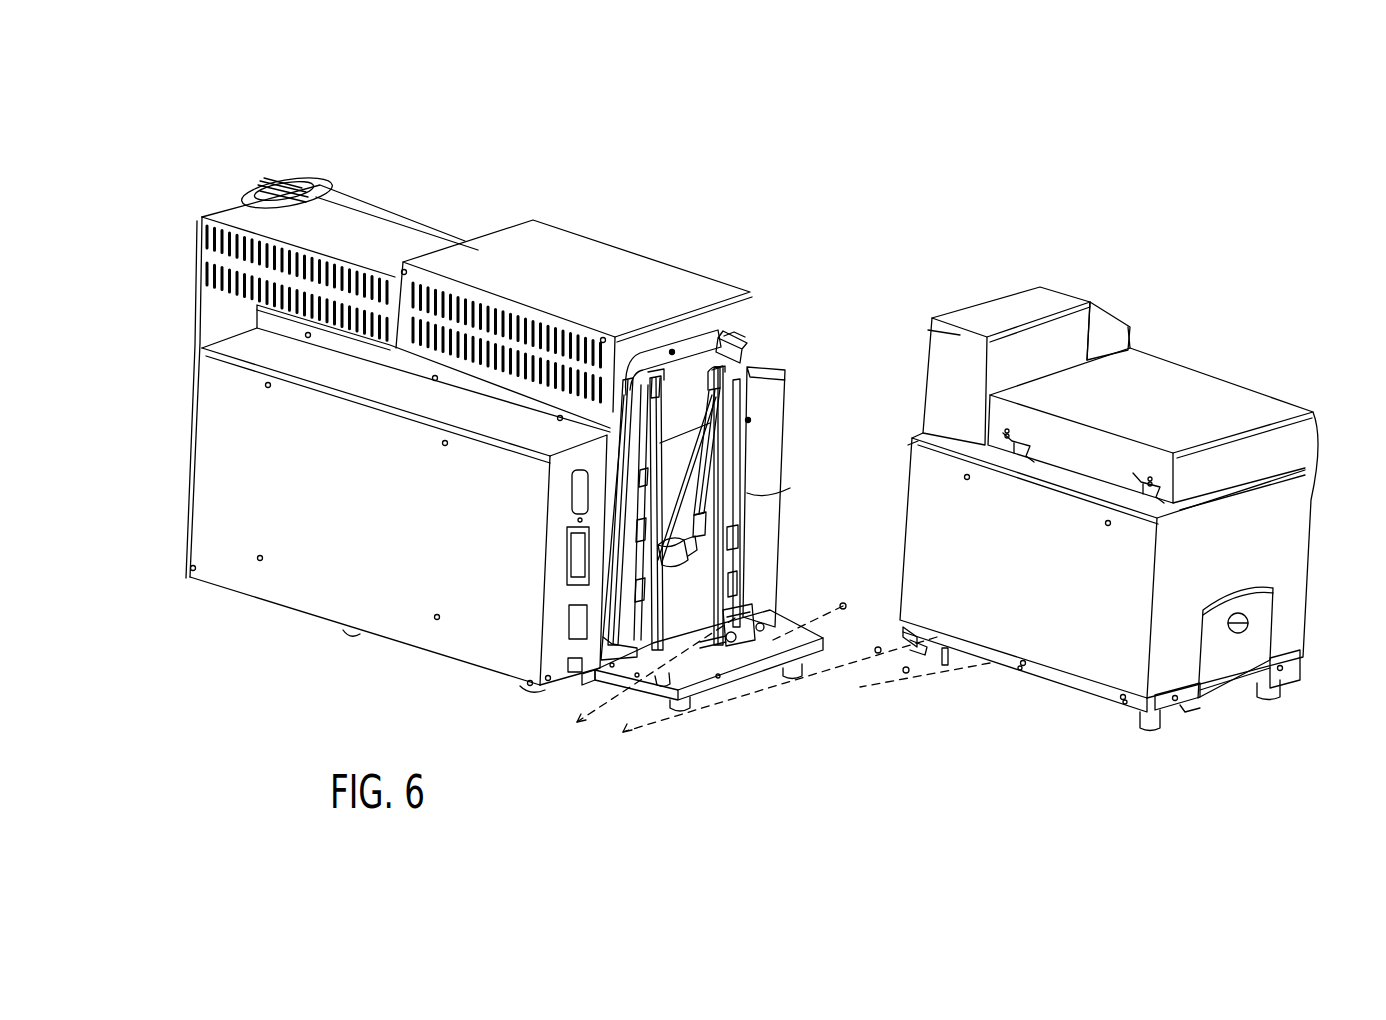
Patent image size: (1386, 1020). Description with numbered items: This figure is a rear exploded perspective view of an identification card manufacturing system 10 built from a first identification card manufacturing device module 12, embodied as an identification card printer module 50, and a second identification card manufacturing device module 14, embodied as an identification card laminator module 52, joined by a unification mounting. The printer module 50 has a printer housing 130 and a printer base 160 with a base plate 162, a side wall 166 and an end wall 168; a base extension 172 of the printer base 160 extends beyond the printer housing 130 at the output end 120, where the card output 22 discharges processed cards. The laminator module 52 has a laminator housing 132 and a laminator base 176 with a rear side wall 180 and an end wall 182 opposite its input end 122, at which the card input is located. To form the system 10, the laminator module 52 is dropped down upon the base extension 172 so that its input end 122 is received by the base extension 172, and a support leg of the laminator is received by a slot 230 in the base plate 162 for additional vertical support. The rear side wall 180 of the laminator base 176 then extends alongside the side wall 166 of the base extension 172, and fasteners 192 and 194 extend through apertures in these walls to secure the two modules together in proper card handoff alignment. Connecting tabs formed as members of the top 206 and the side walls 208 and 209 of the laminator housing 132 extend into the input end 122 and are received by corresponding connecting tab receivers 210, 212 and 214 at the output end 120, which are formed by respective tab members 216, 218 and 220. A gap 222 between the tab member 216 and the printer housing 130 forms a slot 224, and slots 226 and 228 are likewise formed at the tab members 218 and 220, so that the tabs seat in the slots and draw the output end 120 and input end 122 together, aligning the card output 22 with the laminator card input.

The identification card manufacturing system 10 is at (1148, 80).
The first identification card manufacturing device module 12 is at (350, 210).
The second identification card manufacturing device module 14 is at (1262, 397).
The card output 22 is at (680, 570).
The identification card printer module 50 is at (407, 228).
The identification card laminator module 52 is at (1195, 382).
The output end 120 is at (765, 495).
The input end 122 is at (908, 462).
The printer housing 130 is at (598, 252).
The laminator housing 132 is at (1062, 300).
The printer base 160 is at (647, 677).
The base plate 162 is at (773, 643).
The side wall 166 is at (617, 670).
The end wall 168 is at (760, 672).
The base extension 172 is at (757, 673).
The laminator base 176 is at (1103, 697).
The rear side wall 180 is at (1043, 673).
The end wall 182 is at (1295, 670).
The fastener 192 is at (910, 672).
The fastener 194 is at (880, 645).
The top 206 is at (1023, 295).
The side wall 208 is at (1137, 335).
The side wall 209 is at (945, 378).
The connecting tab receiver 210 is at (712, 340).
The connecting tab receiver 212 is at (748, 338).
The connecting tab receiver 214 is at (630, 368).
The tab member 216 is at (655, 372).
The tab member 218 is at (745, 352).
The tab member 220 is at (557, 462).
The gap 222 is at (683, 345).
The slot 224 is at (700, 348).
The slot 226 is at (743, 335).
The slot 228 is at (605, 405).
The slot 230 is at (687, 667).